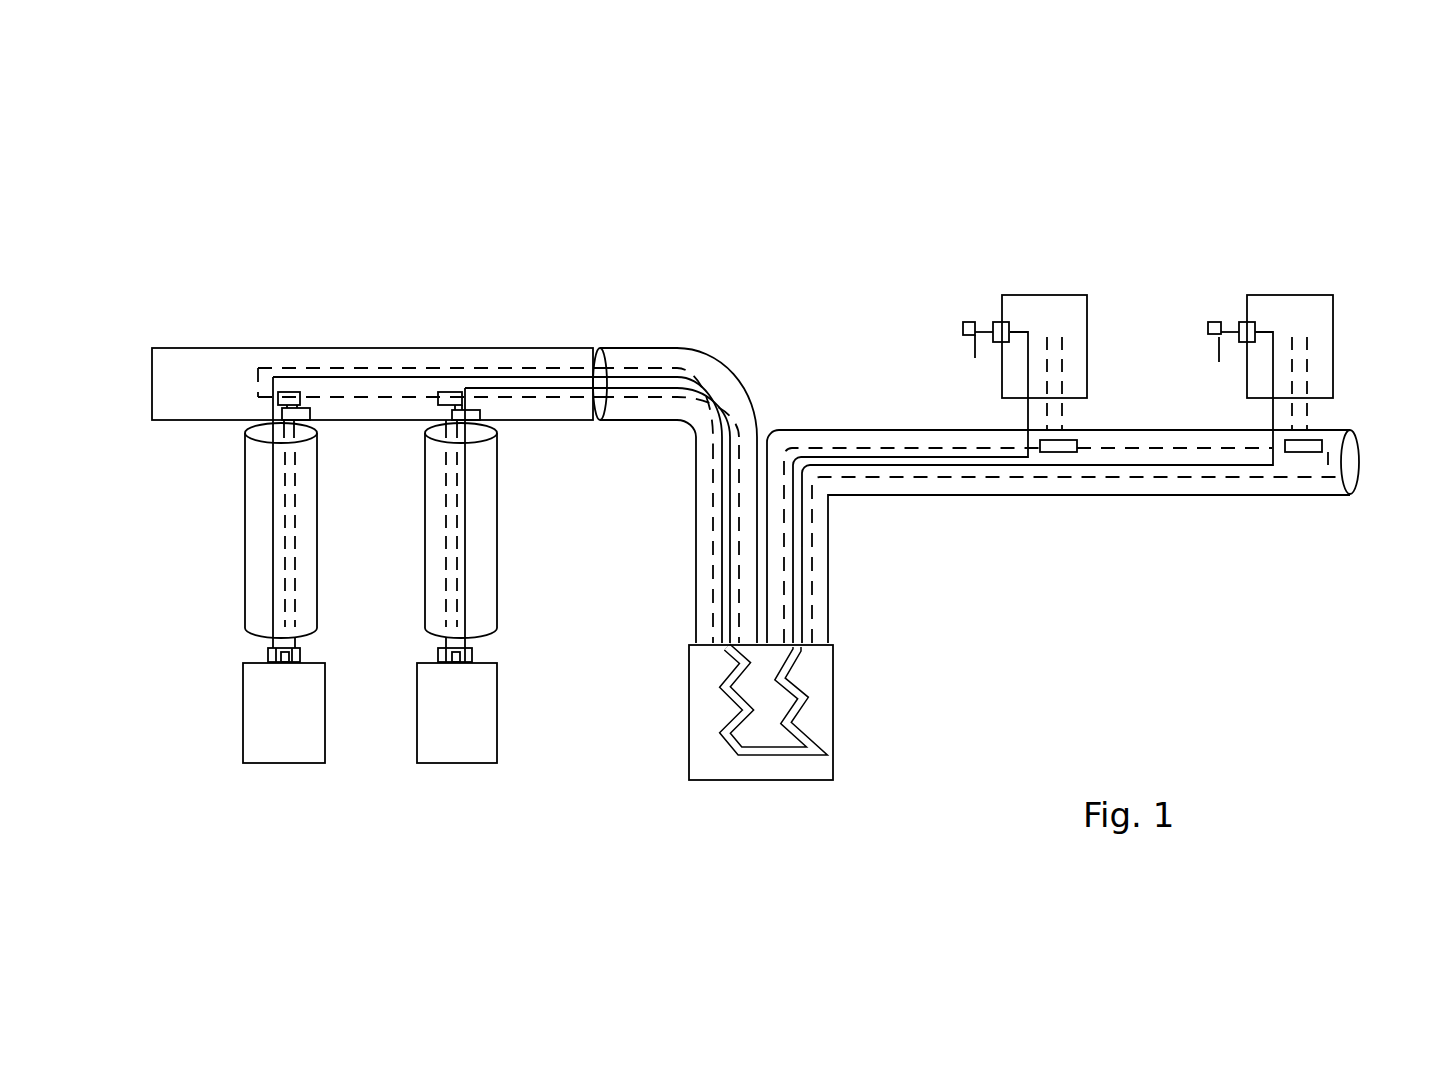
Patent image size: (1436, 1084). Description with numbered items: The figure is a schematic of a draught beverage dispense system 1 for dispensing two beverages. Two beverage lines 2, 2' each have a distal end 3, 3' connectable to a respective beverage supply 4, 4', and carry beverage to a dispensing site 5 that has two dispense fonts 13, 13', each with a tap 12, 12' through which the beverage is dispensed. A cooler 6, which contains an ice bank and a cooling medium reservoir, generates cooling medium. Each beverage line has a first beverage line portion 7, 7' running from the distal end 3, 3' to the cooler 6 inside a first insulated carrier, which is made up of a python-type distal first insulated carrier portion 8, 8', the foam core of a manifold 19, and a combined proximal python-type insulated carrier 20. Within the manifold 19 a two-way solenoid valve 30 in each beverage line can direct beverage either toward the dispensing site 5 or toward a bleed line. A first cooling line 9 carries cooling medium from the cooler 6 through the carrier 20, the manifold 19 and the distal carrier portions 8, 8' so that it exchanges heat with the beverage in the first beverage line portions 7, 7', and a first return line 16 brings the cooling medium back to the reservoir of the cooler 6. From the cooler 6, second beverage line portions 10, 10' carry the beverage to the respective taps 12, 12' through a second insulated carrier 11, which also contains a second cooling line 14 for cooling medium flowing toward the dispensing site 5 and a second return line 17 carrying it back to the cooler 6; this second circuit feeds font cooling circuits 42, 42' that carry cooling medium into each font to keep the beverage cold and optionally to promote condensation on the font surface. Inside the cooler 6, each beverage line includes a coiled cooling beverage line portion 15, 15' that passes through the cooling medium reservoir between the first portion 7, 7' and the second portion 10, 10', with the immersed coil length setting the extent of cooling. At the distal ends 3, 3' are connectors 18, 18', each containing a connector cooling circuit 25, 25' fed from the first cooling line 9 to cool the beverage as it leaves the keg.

The draught beverage dispense system 1 is at (322, 282).
The beverage line 2 is at (678, 348).
The beverage line 2' is at (501, 510).
The distal end 3 is at (227, 699).
The distal end 3' is at (521, 699).
The beverage supply 4 is at (284, 751).
The beverage supply 4' is at (457, 751).
The dispensing site 5 is at (1172, 250).
The cooler 6 is at (833, 715).
The first beverage line portion 7 is at (238, 512).
The first beverage line portion 7' is at (503, 518).
The distal first insulated carrier portion 8 is at (236, 530).
The distal first insulated carrier portion 8' is at (496, 530).
The first cooling line 9 is at (712, 505).
The second beverage line portion 10 is at (910, 487).
The second beverage line portion 10' is at (1037, 487).
The second insulated carrier 11 is at (974, 496).
The tap 12 is at (954, 311).
The tap 12' is at (1196, 329).
The dispense font 13 is at (1047, 312).
The dispense font 13' is at (1294, 318).
The second cooling line 14 is at (912, 448).
The cooling beverage line portion 15 is at (731, 751).
The cooling beverage line portion 15' is at (804, 749).
The first return line 16 is at (448, 366).
The second return line 17 is at (1108, 478).
The connector 18 is at (332, 637).
The connector 18' is at (516, 638).
The manifold 19 is at (227, 348).
The python-type insulated carrier 20 is at (727, 365).
The connector cooling circuit 25 is at (334, 690).
The connector cooling circuit 25' is at (418, 729).
The solenoid valve 30 is at (308, 402).
The font cooling circuit 42 is at (1117, 370).
The font cooling circuit 42' is at (1363, 374).